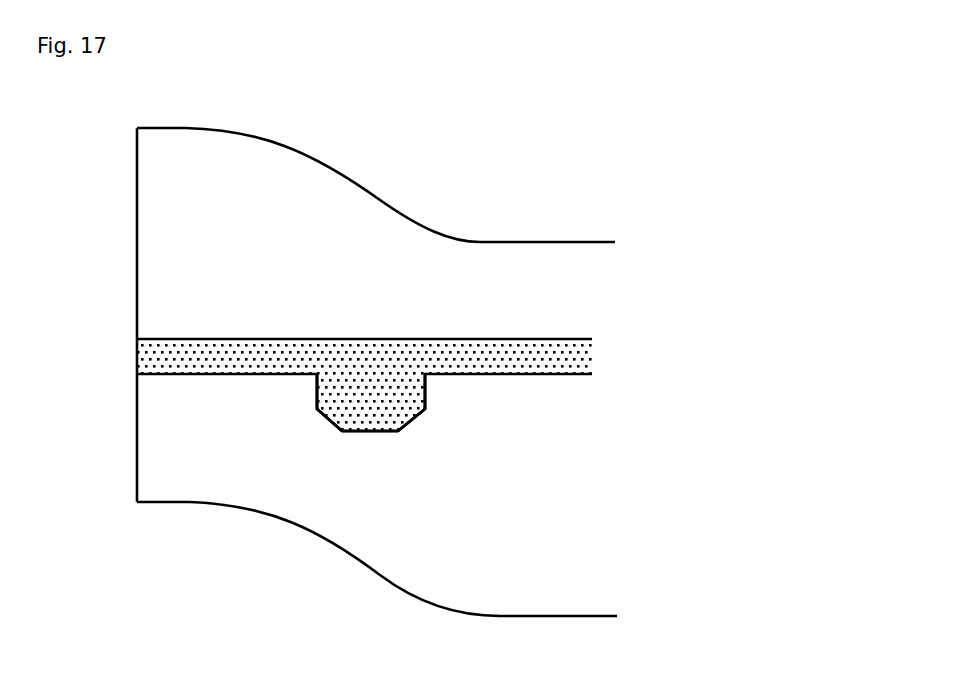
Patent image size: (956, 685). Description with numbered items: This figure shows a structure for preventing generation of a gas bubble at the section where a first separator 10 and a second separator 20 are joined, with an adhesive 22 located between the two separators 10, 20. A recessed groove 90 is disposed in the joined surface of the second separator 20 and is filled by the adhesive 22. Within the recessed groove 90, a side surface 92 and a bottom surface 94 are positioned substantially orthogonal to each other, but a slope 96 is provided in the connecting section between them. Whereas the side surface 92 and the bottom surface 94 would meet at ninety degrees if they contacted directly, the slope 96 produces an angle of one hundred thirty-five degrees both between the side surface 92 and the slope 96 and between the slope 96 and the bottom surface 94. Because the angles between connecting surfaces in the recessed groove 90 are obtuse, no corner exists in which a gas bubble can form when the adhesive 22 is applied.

The first separator 10 is at (197, 262).
The second separator 20 is at (172, 426).
The adhesive 22 is at (148, 368).
The recessed groove 90 is at (378, 400).
The side surface 92 is at (317, 391).
The bottom surface 94 is at (367, 437).
The slope 96 is at (330, 425).